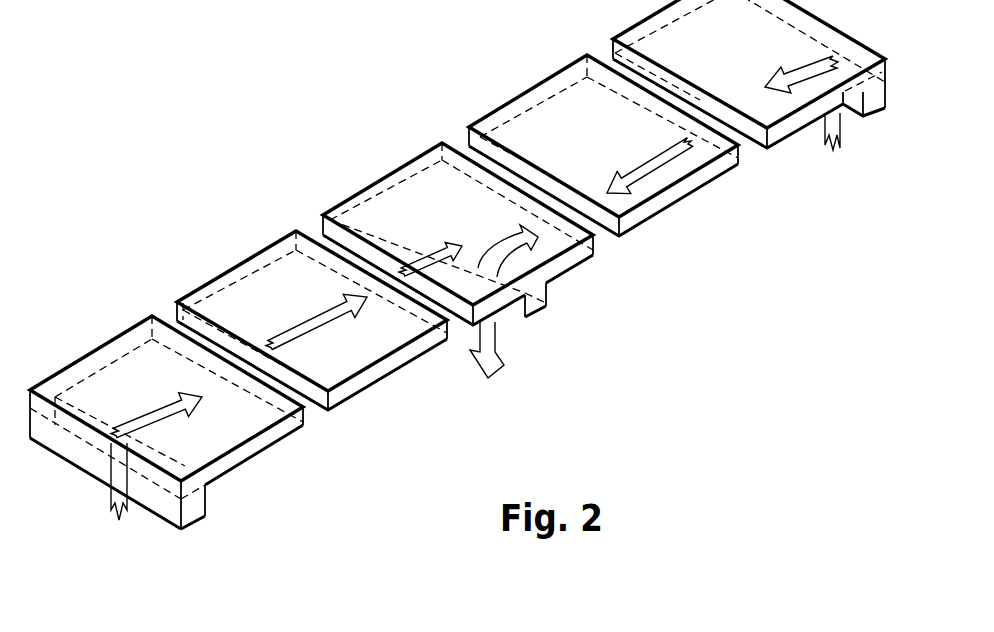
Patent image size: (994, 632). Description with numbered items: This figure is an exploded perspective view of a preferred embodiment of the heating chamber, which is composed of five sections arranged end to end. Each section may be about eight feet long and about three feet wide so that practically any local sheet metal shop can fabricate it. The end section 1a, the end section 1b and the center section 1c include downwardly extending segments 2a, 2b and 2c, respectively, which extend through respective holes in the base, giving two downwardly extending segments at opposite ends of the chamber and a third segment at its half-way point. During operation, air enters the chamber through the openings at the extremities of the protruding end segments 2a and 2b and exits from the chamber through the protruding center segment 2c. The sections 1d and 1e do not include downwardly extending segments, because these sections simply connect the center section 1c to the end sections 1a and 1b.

The end section 1a is at (235, 435).
The downwardly extending segment 2a is at (198, 513).
The connecting section 1d is at (358, 352).
The center section 1c is at (553, 280).
The downwardly extending segment 2c is at (530, 310).
The connecting section 1e is at (652, 183).
The end section 1b is at (777, 127).
The downwardly extending segment 2b is at (867, 108).